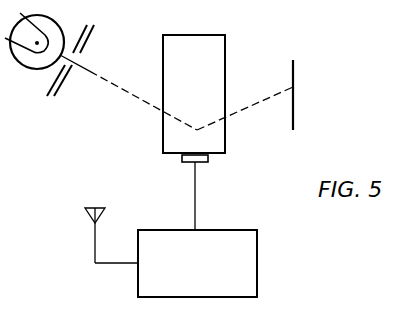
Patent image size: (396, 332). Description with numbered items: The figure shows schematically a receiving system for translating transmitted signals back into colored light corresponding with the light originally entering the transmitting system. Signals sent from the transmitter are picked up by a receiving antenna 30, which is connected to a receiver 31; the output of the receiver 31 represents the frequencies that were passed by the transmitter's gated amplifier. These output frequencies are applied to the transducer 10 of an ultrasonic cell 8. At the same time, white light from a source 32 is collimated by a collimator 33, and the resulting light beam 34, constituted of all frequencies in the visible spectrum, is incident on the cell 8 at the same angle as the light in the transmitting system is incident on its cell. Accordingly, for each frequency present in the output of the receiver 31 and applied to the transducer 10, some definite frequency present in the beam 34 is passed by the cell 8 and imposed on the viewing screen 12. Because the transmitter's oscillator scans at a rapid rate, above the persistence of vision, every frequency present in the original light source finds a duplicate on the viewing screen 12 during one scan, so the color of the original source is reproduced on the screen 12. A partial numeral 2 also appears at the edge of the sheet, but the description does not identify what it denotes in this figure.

The source 32 is at (48, 13).
The collimator 33 is at (94, 25).
The light beam 34 is at (93, 71).
The ultrasonic cell 8 is at (222, 42).
The viewing screen 12 is at (293, 80).
The transducer 10 is at (208, 158).
The receiving antenna 30 is at (105, 212).
The receiver 31 is at (252, 237).
The partial reference numeral 2 is at (4, 96).